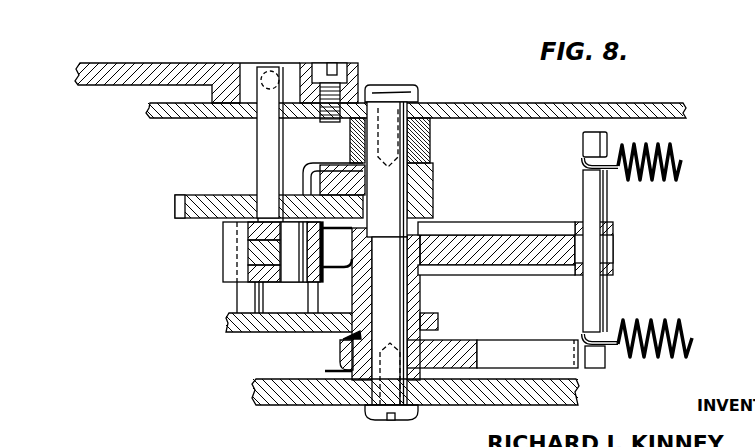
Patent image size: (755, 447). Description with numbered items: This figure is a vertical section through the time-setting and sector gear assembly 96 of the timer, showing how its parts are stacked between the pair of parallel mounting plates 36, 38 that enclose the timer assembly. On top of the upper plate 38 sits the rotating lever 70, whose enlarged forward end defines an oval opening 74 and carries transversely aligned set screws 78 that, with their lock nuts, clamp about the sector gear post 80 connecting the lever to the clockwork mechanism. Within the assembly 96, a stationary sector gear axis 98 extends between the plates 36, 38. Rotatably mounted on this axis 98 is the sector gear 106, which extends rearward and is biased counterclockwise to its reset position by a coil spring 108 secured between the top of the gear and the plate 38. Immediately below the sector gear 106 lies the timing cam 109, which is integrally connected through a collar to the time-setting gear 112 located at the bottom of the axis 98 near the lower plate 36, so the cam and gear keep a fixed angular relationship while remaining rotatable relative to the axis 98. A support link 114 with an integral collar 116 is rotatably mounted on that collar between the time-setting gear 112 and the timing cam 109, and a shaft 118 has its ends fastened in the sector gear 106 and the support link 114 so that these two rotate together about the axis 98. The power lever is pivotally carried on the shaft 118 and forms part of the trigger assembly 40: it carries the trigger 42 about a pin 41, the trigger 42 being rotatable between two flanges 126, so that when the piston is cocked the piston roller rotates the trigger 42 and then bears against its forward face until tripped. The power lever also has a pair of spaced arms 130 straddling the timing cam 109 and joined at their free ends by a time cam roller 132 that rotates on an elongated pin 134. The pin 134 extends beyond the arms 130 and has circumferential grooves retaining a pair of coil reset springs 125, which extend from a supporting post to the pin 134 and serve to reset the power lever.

The mounting plate 36 is at (285, 407).
The mounting plate 38 is at (473, 103).
The trigger assembly 40 is at (240, 264).
The pin 41 is at (300, 279).
The trigger 42 is at (248, 250).
The rotating lever 70 is at (128, 63).
The oval opening 74 is at (243, 63).
The set screws 78 is at (272, 71).
The sector gear post 80 is at (257, 147).
The time-setting and sector gear assembly 96 is at (478, 216).
The sector gear axis 98 is at (408, 186).
The sector gear 106 is at (206, 195).
The coil spring 108 is at (433, 141).
The timing cam 109 is at (528, 256).
The time-setting gear 112 is at (520, 348).
The support link 114 is at (273, 332).
The collar 116 is at (347, 338).
The shaft 118 is at (234, 303).
The coil reset springs 125 is at (681, 170).
The flanges 126 is at (248, 232).
The arms 130 is at (521, 226).
The time cam roller 132 is at (613, 250).
The pin 134 is at (606, 207).